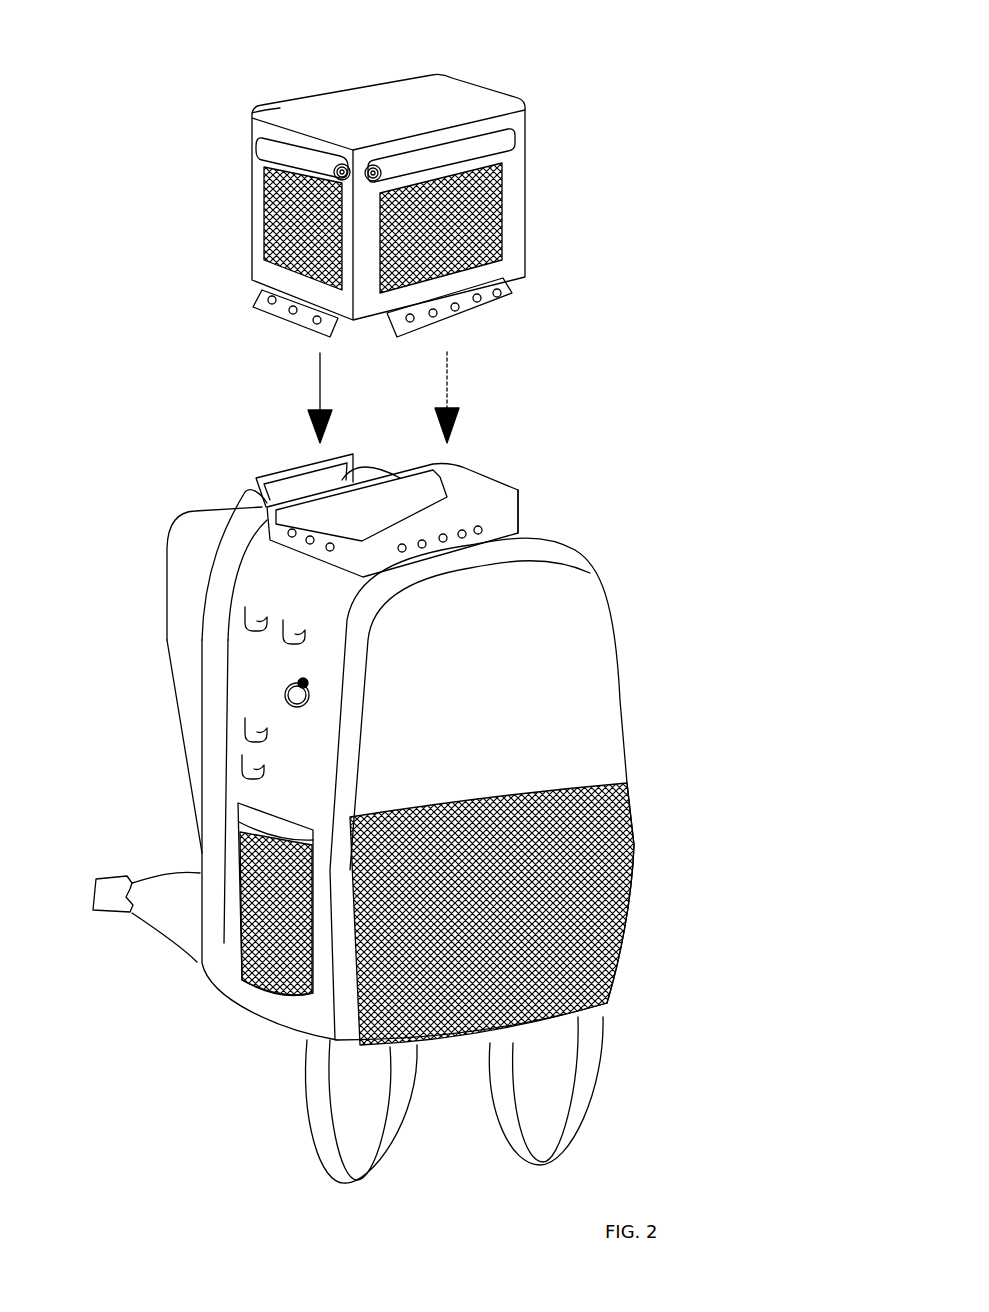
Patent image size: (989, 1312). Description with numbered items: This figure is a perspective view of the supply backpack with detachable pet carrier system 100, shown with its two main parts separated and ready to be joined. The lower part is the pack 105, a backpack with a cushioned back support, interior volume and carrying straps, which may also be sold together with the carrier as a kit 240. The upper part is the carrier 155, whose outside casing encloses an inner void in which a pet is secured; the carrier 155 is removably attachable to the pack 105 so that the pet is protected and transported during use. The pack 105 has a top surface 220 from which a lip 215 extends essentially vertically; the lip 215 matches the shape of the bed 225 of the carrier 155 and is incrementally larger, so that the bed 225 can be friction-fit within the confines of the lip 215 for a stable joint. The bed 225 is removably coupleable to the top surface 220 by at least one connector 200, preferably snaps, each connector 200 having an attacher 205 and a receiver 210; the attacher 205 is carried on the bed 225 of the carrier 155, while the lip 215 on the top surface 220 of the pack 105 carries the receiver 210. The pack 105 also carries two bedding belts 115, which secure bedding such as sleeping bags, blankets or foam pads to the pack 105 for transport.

The supply backpack with detachable pet carrier system 100 is at (152, 103).
The pack 105 is at (647, 663).
The bedding belt 115 is at (290, 1120).
The carrier 155 is at (570, 128).
The connector 200 is at (268, 527).
The attacher 205 is at (462, 314).
The receiver 210 is at (448, 522).
The lip 215 is at (527, 521).
The top surface 220 is at (288, 558).
The bed 225 is at (520, 280).
The kit 240 is at (143, 178).